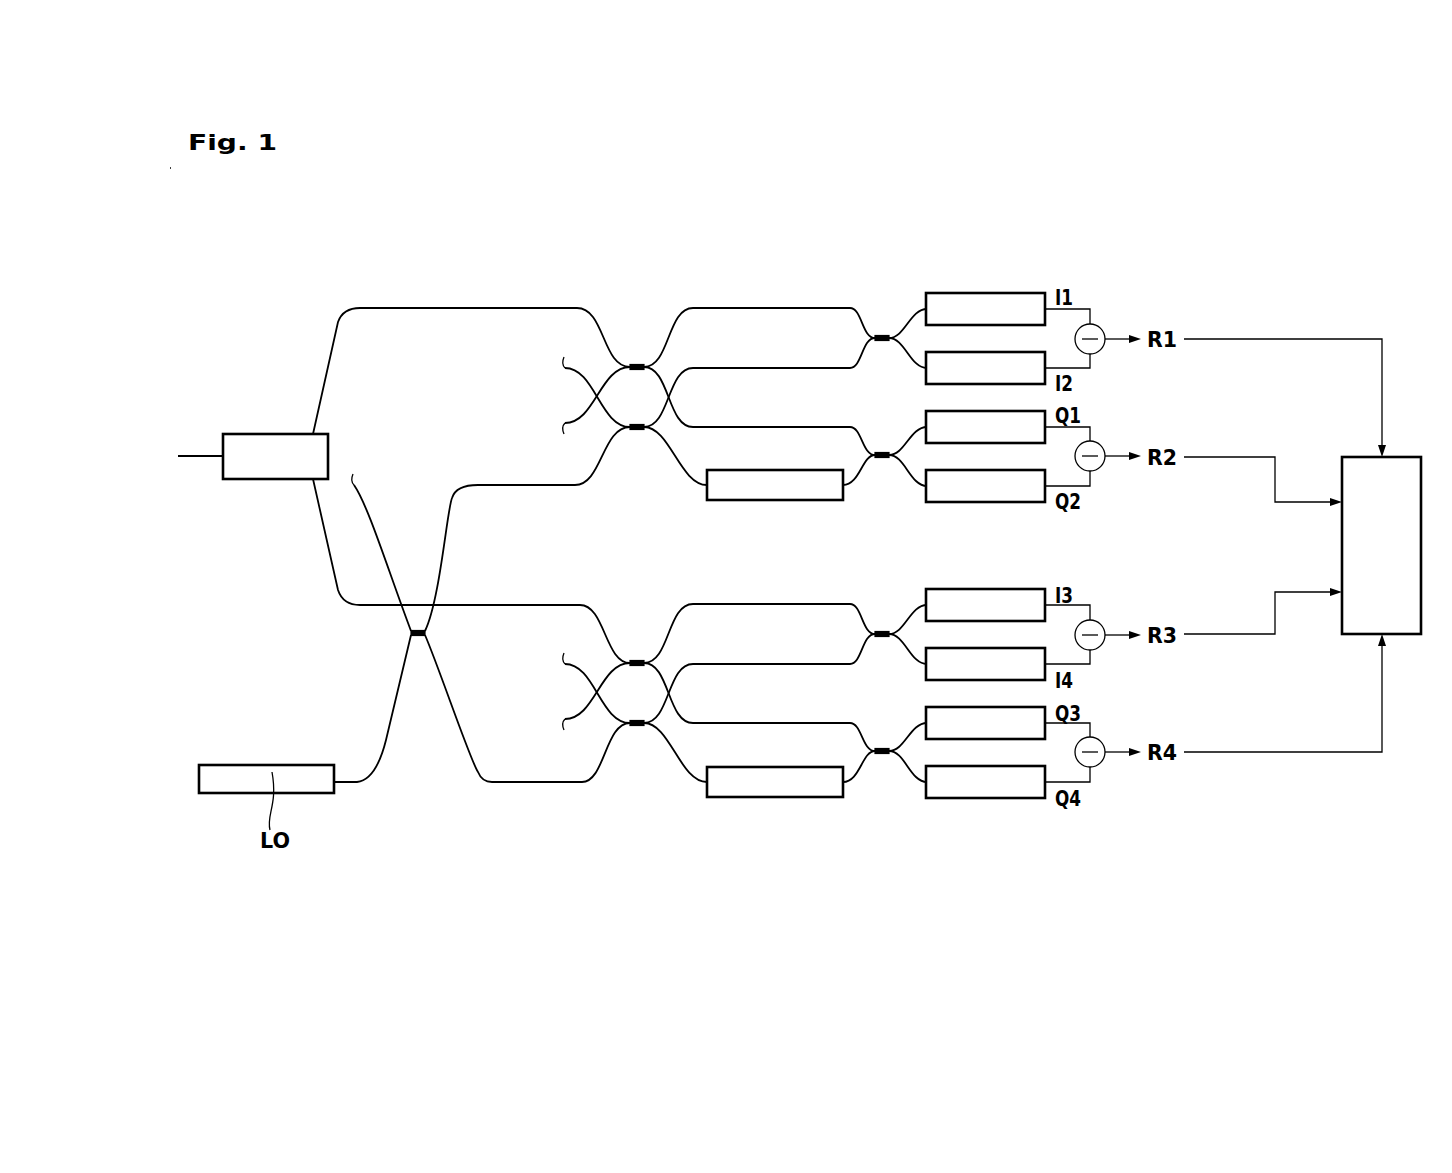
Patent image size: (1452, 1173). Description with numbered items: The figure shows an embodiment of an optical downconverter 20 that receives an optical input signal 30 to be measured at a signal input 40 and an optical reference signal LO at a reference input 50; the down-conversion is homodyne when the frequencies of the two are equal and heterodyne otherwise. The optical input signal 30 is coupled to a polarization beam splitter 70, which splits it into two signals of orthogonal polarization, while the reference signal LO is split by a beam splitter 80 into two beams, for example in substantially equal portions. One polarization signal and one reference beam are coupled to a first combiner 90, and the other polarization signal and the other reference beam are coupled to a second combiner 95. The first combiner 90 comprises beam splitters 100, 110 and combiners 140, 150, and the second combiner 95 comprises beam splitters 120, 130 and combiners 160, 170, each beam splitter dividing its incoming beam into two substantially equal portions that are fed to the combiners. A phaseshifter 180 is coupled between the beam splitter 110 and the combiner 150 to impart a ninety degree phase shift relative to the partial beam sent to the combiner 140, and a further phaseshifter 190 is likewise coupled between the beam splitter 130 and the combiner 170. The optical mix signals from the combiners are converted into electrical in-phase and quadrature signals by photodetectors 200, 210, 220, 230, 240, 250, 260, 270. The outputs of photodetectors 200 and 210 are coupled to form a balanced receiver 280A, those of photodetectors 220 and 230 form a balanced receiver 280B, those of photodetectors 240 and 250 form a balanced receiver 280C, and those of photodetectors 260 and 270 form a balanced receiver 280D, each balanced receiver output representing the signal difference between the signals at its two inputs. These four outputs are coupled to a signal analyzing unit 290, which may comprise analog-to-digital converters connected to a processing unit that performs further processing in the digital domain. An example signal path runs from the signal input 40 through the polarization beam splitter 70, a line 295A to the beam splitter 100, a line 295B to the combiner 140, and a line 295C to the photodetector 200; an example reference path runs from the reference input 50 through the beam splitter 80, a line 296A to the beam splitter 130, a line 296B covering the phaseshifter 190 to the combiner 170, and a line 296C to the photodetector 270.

The optical downconverter 20 is at (270, 300).
The optical input signal 30 is at (182, 457).
The signal input 40 is at (204, 455).
The reference input 50 is at (362, 785).
The polarization beam splitter 70 is at (268, 470).
The beam splitter 80 is at (373, 637).
The first combiner 90 is at (564, 258).
The second combiner 95 is at (612, 834).
The beam splitter 100 is at (639, 326).
The beam splitter 110 is at (639, 456).
The beam splitter 120 is at (639, 638).
The beam splitter 130 is at (639, 750).
The combiner 140 is at (882, 318).
The combiner 150 is at (882, 435).
The combiner 160 is at (882, 614).
The combiner 170 is at (882, 732).
The phaseshifter 180 is at (780, 488).
The further phaseshifter 190 is at (780, 792).
The photodetector 200 is at (967, 321).
The photodetector 210 is at (967, 380).
The photodetector 220 is at (967, 439).
The photodetector 230 is at (967, 498).
The photodetector 240 is at (967, 617).
The photodetector 250 is at (967, 676).
The photodetector 260 is at (967, 735).
The photodetector 270 is at (967, 794).
The balanced receiver 280A is at (1135, 290).
The balanced receiver 280B is at (1135, 408).
The balanced receiver 280C is at (1135, 586).
The balanced receiver 280D is at (1135, 703).
The signal analyzing unit 290 is at (1363, 560).
The line 295A is at (415, 307).
The line 295B is at (778, 307).
The line 295C is at (908, 309).
The line 296A is at (517, 784).
The line 296B is at (697, 792).
The line 296C is at (905, 800).